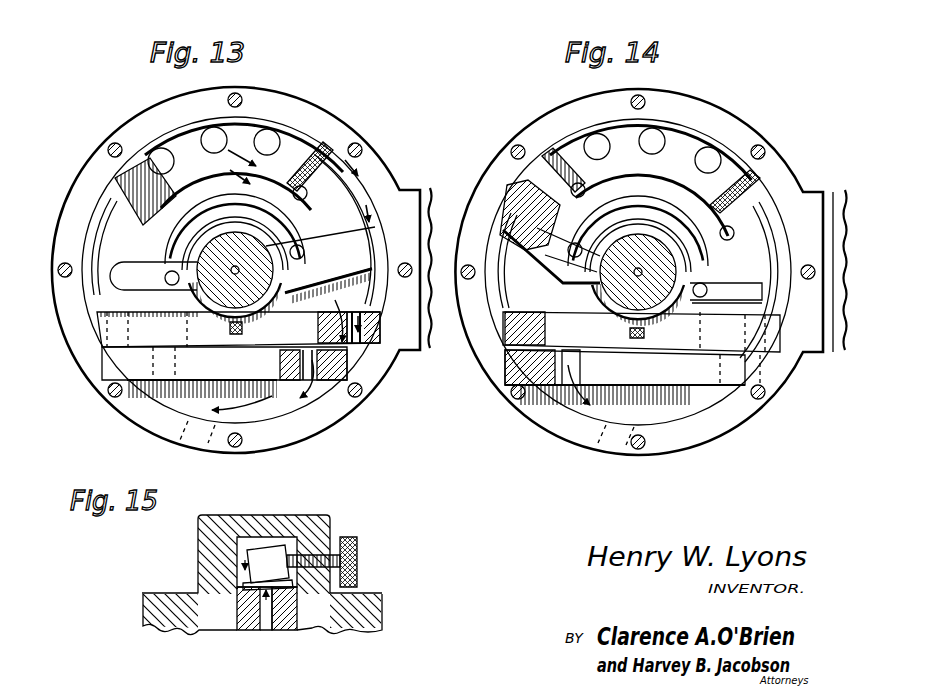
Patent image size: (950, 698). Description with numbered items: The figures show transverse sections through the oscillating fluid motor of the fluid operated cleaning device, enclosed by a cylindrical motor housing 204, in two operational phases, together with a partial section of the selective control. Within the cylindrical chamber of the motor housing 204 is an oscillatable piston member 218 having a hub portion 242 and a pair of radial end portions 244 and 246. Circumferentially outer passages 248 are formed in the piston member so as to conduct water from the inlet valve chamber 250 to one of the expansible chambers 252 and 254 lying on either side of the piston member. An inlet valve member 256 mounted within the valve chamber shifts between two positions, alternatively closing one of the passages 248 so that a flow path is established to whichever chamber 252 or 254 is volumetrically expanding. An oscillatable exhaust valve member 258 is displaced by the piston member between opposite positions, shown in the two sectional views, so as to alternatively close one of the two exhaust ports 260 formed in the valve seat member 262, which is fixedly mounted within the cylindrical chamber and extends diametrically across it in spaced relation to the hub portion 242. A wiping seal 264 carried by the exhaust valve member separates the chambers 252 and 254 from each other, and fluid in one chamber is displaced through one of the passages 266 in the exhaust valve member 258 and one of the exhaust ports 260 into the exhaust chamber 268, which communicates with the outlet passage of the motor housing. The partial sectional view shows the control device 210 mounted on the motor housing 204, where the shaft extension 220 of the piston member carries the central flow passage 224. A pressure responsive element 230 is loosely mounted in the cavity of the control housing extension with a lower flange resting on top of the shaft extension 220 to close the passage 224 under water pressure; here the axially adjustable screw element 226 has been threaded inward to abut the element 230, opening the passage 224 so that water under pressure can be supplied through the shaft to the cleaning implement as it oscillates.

In FIG. 13, the motor housing 204 is at (318, 120).
In FIG. 15, the motor housing 204 is at (160, 608).
In FIG. 15, the control device 210 is at (224, 512).
In FIG. 13, the piston member 218 is at (238, 175).
In FIG. 13, the shaft extension 220 is at (232, 268).
In FIG. 15, the shaft extension 220 is at (283, 623).
In FIG. 15, the central flow passage 224 is at (266, 628).
In FIG. 15, the screw element 226 is at (318, 553).
In FIG. 15, the pressure responsive element 230 is at (264, 547).
In FIG. 13, the hub portion 242 is at (215, 305).
In FIG. 13, the radial end portion 244 is at (355, 195).
In FIG. 13, the radial end portion 246 is at (95, 235).
In FIG. 14, the circumferentially outer passages 248 is at (515, 200).
In FIG. 14, the inlet valve chamber 250 is at (575, 145).
In FIG. 14, the expansible chamber 252 is at (530, 295).
In FIG. 13, the expansible chamber 254 is at (360, 240).
In FIG. 14, the inlet valve member 256 is at (670, 115).
In FIG. 13, the exhaust valve member 258 is at (105, 340).
In FIG. 14, the exhaust valve member 258 is at (668, 338).
In FIG. 14, the exhaust ports 260 is at (540, 405).
In FIG. 14, the valve seat member 262 is at (730, 372).
In FIG. 13, the wiping seal 264 is at (244, 330).
In FIG. 14, the wiping seal 264 is at (637, 340).
In FIG. 14, the passages 266 is at (520, 360).
In FIG. 14, the exhaust chamber 268 is at (680, 425).